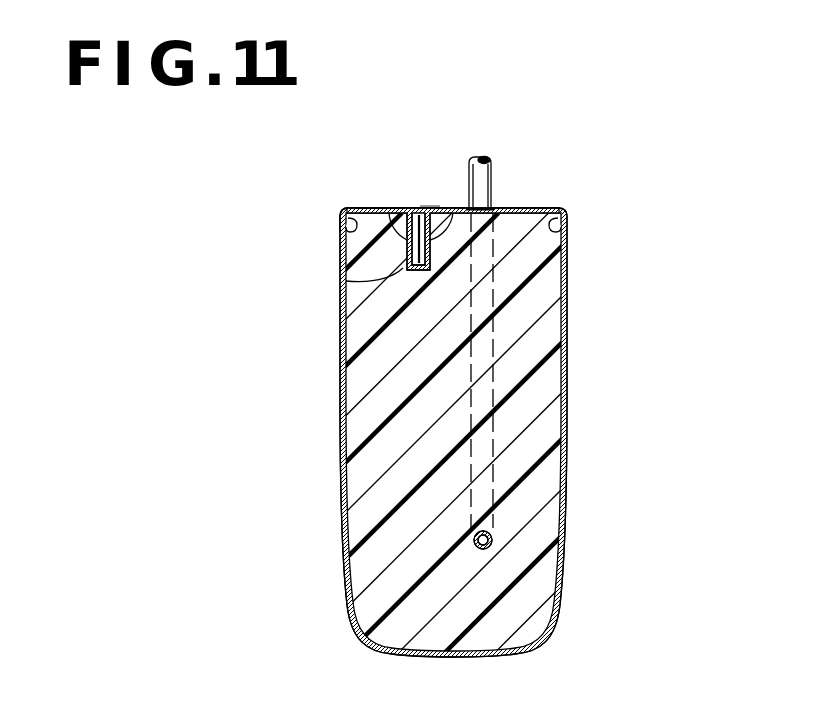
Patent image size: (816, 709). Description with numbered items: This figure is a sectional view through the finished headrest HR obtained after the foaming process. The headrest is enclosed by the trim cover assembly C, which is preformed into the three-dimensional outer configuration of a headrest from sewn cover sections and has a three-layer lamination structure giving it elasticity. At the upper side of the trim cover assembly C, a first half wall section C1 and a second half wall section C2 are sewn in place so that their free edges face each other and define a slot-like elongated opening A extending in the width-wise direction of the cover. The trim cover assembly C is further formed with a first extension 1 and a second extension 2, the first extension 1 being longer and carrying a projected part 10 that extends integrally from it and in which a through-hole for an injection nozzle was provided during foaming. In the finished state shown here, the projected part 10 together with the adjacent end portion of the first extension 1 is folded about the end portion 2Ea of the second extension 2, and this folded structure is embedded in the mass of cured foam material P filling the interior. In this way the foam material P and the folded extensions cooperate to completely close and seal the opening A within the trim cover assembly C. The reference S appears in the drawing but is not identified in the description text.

The first extension 1 is at (449, 214).
The second extension 2 is at (409, 208).
The projected part 10 is at (367, 208).
The elongated opening A is at (430, 202).
The terminal pin S is at (489, 175).
The cured foam material P is at (376, 351).
The trim cover assembly C is at (567, 376).
The first half wall section C1 is at (526, 206).
The second half wall section C2 is at (367, 208).
The end portion of second extension 2Ea is at (342, 277).
The headrest HR is at (652, 234).